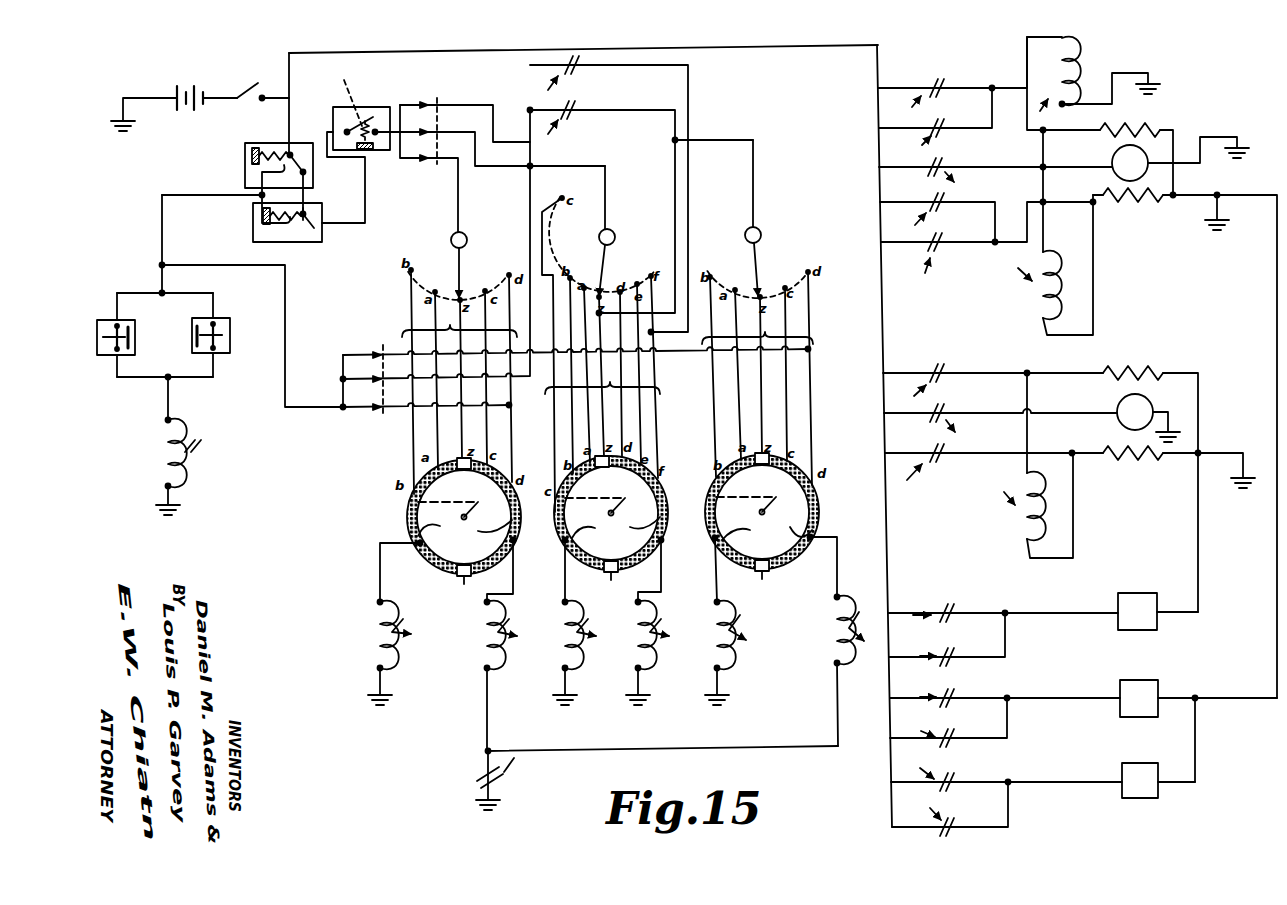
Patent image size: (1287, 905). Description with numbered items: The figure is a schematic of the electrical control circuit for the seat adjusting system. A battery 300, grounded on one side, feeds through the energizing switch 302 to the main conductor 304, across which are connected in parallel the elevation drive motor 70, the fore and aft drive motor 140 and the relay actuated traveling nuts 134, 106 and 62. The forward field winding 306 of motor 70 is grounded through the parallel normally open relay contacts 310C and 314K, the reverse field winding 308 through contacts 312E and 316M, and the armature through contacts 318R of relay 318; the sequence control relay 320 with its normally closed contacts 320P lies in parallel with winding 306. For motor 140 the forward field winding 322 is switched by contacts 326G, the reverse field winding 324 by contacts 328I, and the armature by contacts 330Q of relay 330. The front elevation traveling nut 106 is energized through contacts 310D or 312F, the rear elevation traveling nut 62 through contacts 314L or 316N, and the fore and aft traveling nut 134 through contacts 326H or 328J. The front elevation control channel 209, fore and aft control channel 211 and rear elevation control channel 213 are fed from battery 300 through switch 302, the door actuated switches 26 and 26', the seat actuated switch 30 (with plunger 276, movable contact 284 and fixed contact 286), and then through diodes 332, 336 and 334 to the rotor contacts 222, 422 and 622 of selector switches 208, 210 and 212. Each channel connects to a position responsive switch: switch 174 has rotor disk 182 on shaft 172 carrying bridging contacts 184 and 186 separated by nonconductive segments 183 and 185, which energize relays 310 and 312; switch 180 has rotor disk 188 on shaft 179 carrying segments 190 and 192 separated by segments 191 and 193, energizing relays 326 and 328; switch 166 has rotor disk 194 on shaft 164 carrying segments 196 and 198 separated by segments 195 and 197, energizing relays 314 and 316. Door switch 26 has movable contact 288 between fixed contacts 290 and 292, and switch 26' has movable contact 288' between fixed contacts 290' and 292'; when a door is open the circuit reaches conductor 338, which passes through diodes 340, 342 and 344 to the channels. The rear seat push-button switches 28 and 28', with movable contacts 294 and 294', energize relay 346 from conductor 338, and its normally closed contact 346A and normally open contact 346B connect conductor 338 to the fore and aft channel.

The battery 300 is at (186, 80).
The energizing switch 302 is at (258, 74).
The main conductor 304 is at (470, 50).
The seat actuated switch 30 is at (338, 108).
The movable contact 284 is at (374, 114).
The operating plunger 276 is at (362, 92).
The fixed contact 286 is at (377, 135).
The movable contact 288 is at (309, 105).
The door responsive switch 26 is at (255, 165).
The fixed contact 290 is at (223, 181).
The fixed contact 292 is at (321, 184).
The door actuated switch 26' is at (261, 222).
The movable contact 288' is at (335, 209).
The fixed contact 290' is at (256, 228).
The fixed contact 292' is at (334, 231).
The diode 334 is at (439, 102).
The diode 336 is at (439, 131).
The diode 332 is at (441, 160).
The conductor 338 is at (159, 244).
The rear seat manually operable switch 28 is at (116, 327).
The rear seat manually operable switch 28' is at (220, 333).
The movable contact 294 is at (138, 337).
The movable contact 294' is at (187, 345).
The relay 346 is at (162, 444).
The normally closed relay contact 346A is at (576, 68).
The normally open relay contact 346B is at (574, 113).
The channel selector switch 208 is at (452, 236).
The rotor contact 222 is at (462, 266).
The front elevation control channel 209 is at (448, 327).
The diode 344 is at (381, 350).
The diode 342 is at (378, 378).
The reverse current blocking diode 340 is at (386, 412).
The channel selector switch 210 is at (611, 229).
The rotor contact 422 is at (604, 262).
The channel selector switch 212 is at (760, 228).
The rotor contact 622 is at (760, 266).
The fore and aft control channel 211 is at (612, 382).
The rear elevation control channel 213 is at (770, 332).
The shaft 172 is at (403, 512).
The front elevation responsive switch 174 is at (405, 500).
The nonconductive segment 185 is at (462, 468).
The bridging contact 184 is at (436, 530).
The bridging contact 186 is at (494, 530).
The rotor disk 182 is at (424, 548).
The nonconductive segment 183 is at (466, 578).
The shaft 179 is at (555, 505).
The fore and aft position responsive switch 180 is at (563, 539).
The rotor disk 188 is at (582, 570).
The non-conductive segment 191 is at (611, 565).
The non-conductive segment 193 is at (604, 466).
The conductive arcuate segment 190 is at (593, 532).
The conductive arcuate segment 192 is at (641, 523).
The shaft 164 is at (708, 505).
The rear elevation position responsive switch 166 is at (820, 498).
The non-conductive segment 195 is at (762, 465).
The conductive arcuate segment 196 is at (746, 538).
The conductive arcuate segment 198 is at (798, 526).
The rotor disk 194 is at (748, 553).
The non-conductive segment 197 is at (762, 565).
The relay 310 is at (372, 630).
The relay 312 is at (479, 648).
The relay 326 is at (560, 660).
The relay 328 is at (634, 662).
The relay 314 is at (717, 604).
The relay 316 is at (830, 630).
The normally closed relay contacts 320P is at (498, 770).
The normally open relay contacts 310C is at (940, 86).
The normally open relay contacts 314K is at (938, 124).
The sequence control relay 320 is at (1076, 66).
The forward field winding 306 is at (1143, 124).
The normally open relay contacts 318R is at (946, 164).
The elevation drive motor 70 is at (1150, 165).
The relay 318 is at (1035, 298).
The normally open relay contacts 312E is at (934, 196).
The normally open relay contacts 316M is at (940, 250).
The reverse field winding 308 is at (1135, 205).
The normally open relay contacts 326G is at (948, 356).
The forward field winding 322 is at (1132, 370).
The normally open relay contacts 330Q is at (952, 405).
The fore and aft drive motor 140 is at (1152, 405).
The normally open relay contacts 328I is at (944, 464).
The reverse field winding 324 is at (1133, 462).
The relay 330 is at (1020, 525).
The fore and aft traveling nut 134 is at (1138, 593).
The normally open relay contacts 326H is at (955, 606).
The relay contacts 328J is at (950, 648).
The front elevation traveling nut 106 is at (1142, 680).
The normally open relay contacts 310D is at (950, 692).
The normally open relay contacts 312F is at (956, 745).
The rear elevation traveling nut 62 is at (1142, 764).
The normally open relay contacts 314L is at (960, 780).
The normally open relay contacts 316N is at (955, 822).